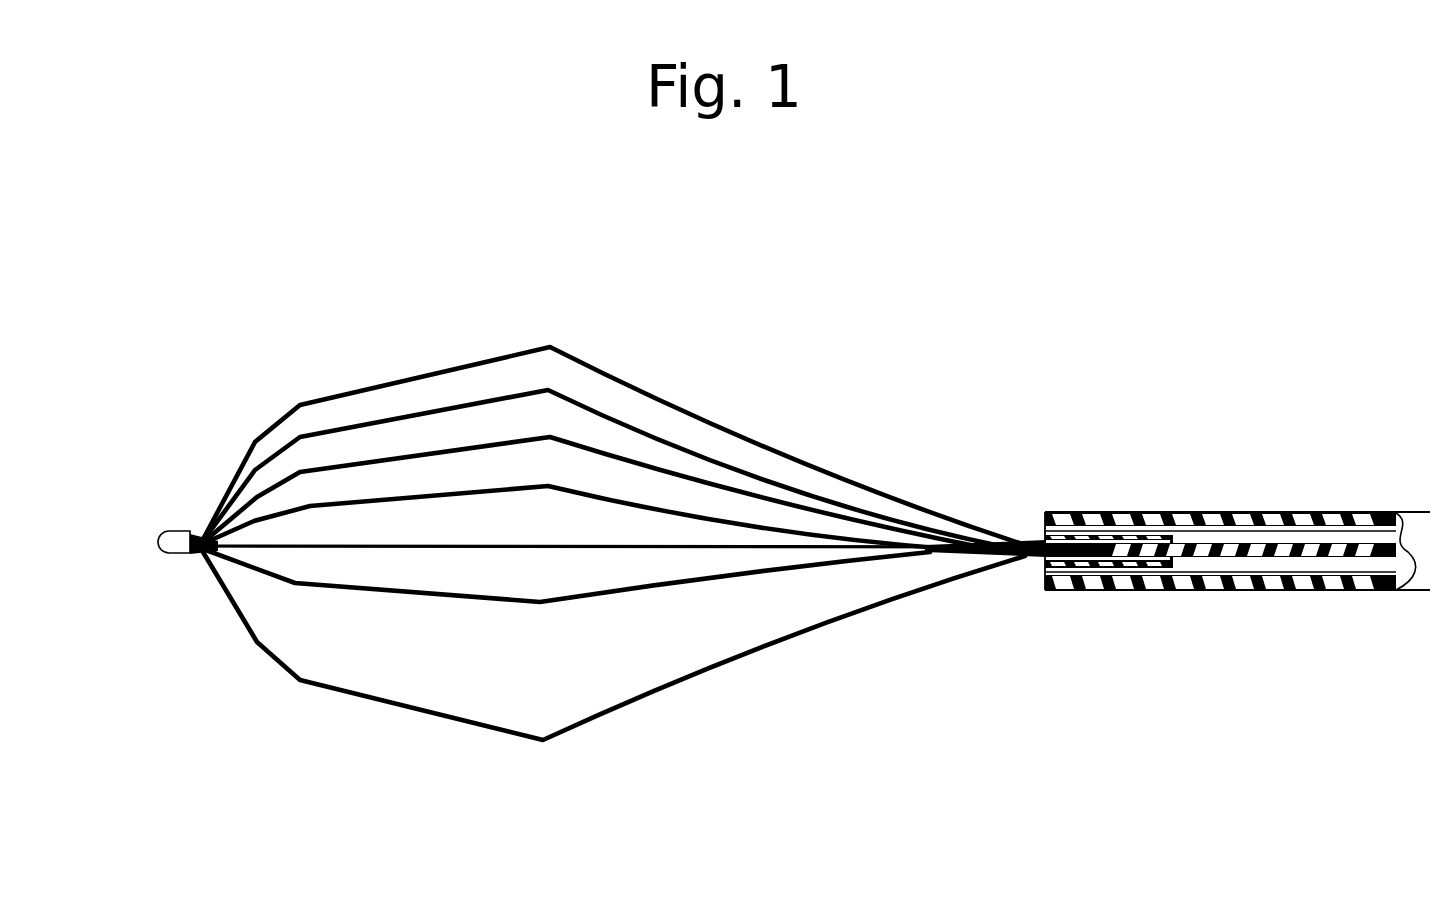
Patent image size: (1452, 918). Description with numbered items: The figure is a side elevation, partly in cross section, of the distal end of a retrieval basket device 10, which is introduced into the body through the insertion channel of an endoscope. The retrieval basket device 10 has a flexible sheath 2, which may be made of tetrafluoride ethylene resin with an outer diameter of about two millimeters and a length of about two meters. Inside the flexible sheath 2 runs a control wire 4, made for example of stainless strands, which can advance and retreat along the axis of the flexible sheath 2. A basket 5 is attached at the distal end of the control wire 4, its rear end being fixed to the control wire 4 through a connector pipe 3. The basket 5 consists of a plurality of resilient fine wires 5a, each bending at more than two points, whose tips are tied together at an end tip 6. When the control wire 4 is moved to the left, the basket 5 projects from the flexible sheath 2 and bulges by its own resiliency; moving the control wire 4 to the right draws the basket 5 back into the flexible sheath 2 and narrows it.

The retrieval basket device 10 is at (489, 267).
The basket 5 is at (372, 336).
The resilient fine wires 5a is at (728, 523).
The end tip 6 is at (170, 536).
The flexible sheath 2 is at (1225, 512).
The connector pipe 3 is at (1127, 535).
The control wire 4 is at (1316, 553).